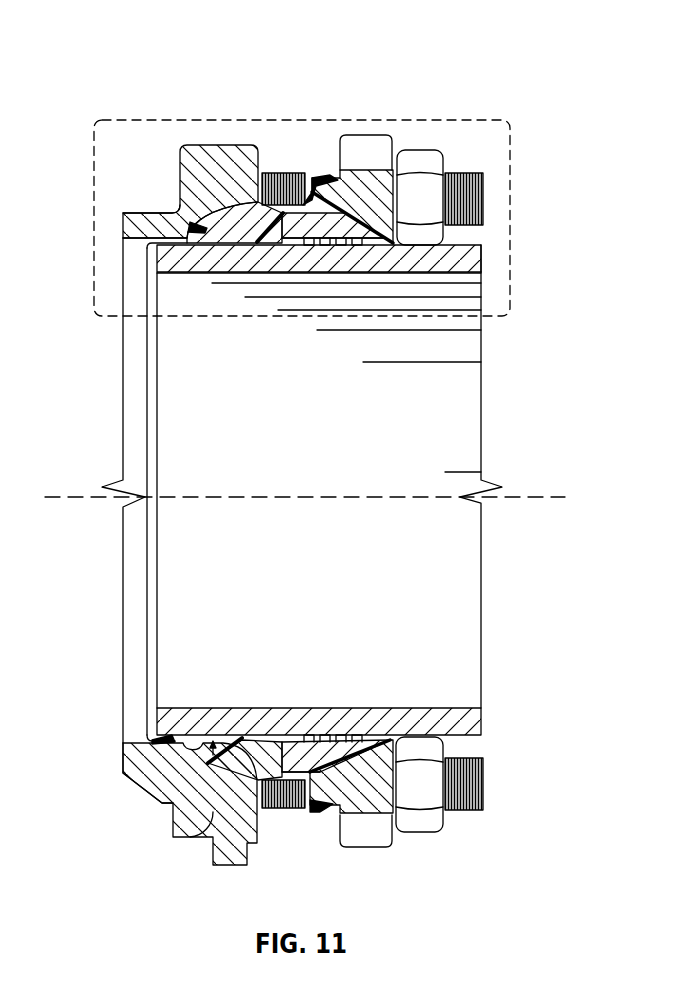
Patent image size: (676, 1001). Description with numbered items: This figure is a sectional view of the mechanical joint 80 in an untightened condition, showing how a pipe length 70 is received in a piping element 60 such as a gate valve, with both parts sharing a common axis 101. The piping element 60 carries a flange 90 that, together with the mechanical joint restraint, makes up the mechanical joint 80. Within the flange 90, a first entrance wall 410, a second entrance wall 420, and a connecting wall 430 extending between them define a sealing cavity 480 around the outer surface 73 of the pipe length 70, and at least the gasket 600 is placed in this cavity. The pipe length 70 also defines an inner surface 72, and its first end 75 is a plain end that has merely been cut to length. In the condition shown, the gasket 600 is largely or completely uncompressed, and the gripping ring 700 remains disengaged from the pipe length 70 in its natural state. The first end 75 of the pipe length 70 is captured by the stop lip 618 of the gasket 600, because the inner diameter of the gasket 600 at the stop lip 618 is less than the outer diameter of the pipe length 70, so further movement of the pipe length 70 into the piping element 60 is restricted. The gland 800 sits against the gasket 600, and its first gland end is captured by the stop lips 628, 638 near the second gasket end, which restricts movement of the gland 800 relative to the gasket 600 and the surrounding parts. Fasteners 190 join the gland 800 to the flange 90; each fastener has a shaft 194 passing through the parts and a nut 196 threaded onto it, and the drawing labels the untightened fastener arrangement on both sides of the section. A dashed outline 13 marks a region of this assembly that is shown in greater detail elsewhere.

The detail region 13 is at (505, 120).
The mechanical joint 80 is at (604, 83).
The piping element 60 is at (157, 213).
The flange 90 is at (210, 145).
The shaft 194 is at (288, 172).
The stop lip 638 is at (322, 178).
The stop lip 628 is at (330, 190).
The gland 800 is at (367, 143).
The fasteners 190 is at (413, 160).
The nut 196 is at (377, 444).
The second entrance wall 420 is at (135, 244).
The stop lip 618 is at (147, 258).
The connecting wall 430 is at (190, 246).
The sealing cavity 480 is at (114, 492).
The gasket 600 is at (212, 250).
The first entrance wall 410 is at (258, 242).
The gripping ring 700 is at (306, 243).
The pipe length 70 is at (433, 432).
The inner surface 72 is at (537, 325).
The axis 101 is at (560, 498).
The first end 75 is at (172, 743).
The outer surface 73 is at (275, 745).